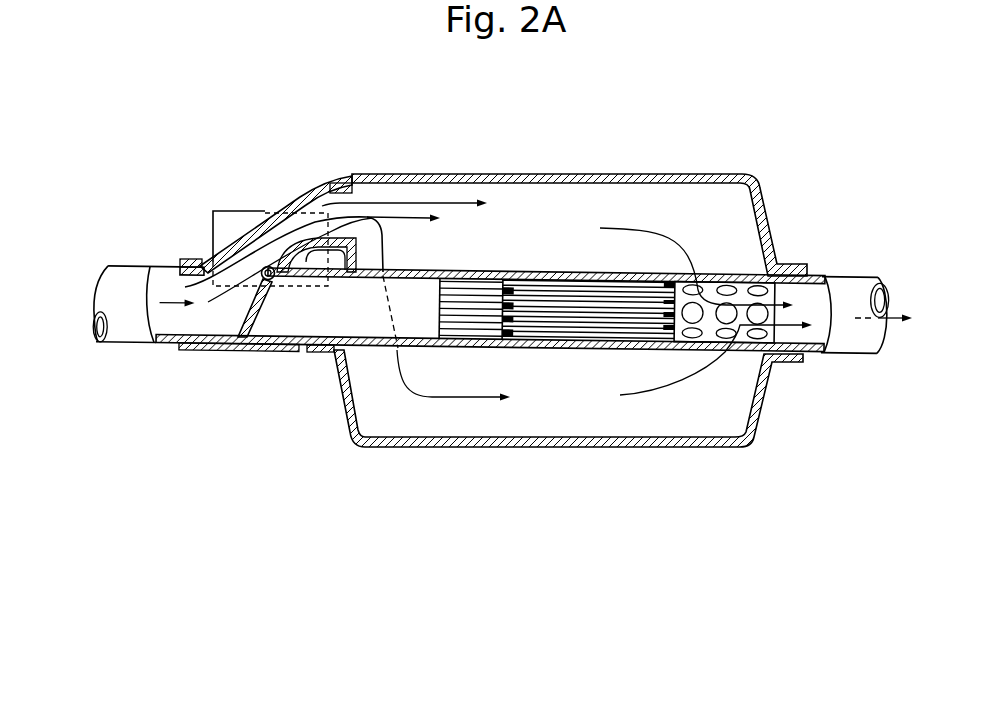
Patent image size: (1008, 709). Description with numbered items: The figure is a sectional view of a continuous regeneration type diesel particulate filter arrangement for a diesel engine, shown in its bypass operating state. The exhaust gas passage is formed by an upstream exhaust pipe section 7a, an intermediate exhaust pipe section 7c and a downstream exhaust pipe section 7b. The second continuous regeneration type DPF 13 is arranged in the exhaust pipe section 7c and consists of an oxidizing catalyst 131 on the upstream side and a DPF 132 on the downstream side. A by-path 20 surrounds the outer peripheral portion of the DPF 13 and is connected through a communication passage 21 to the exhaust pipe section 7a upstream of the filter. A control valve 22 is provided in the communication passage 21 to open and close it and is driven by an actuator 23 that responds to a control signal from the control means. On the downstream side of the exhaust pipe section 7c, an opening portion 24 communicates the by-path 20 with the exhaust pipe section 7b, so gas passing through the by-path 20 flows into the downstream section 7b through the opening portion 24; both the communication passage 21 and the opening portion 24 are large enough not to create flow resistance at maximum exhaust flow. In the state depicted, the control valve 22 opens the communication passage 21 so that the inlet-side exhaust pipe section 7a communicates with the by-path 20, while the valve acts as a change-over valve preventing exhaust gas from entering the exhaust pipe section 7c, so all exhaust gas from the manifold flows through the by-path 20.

The exhaust pipe section 7a is at (168, 317).
The exhaust pipe section 7b is at (810, 293).
The exhaust pipe section 7c is at (350, 313).
The second continuous regeneration type DPF 13 is at (553, 421).
The oxidizing catalyst 131 is at (477, 325).
The DPF 132 is at (560, 330).
The by-path 20 is at (562, 228).
The communication passage 21 is at (268, 238).
The control valve 22 is at (263, 325).
The actuator 23 is at (218, 212).
The opening portion 24 is at (727, 313).